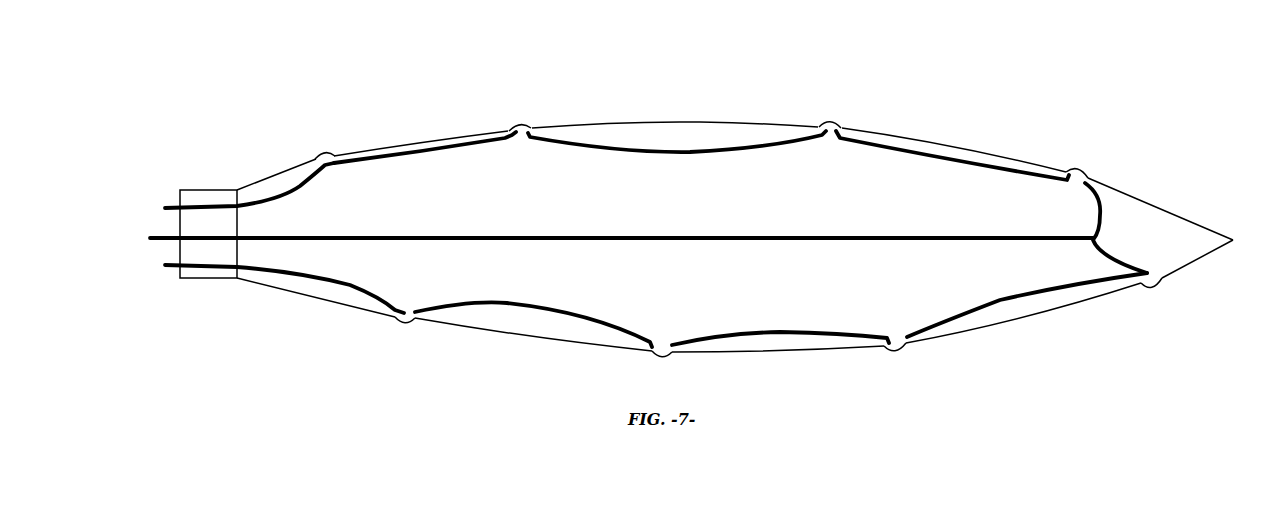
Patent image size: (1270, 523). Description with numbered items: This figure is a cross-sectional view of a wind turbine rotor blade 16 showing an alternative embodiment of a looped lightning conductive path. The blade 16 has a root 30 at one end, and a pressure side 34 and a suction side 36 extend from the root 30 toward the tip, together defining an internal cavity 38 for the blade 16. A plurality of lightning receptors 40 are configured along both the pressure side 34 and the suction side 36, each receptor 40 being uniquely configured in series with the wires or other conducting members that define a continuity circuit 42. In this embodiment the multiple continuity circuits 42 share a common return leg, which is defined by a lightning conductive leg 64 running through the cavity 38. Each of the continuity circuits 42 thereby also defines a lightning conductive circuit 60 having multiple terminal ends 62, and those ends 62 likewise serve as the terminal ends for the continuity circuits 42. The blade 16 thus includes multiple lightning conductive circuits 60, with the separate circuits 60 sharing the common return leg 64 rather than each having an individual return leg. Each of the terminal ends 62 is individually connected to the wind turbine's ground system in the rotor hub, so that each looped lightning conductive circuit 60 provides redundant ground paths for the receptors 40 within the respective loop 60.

The wind turbine rotor blade 16 is at (1117, 95).
The root 30 is at (205, 190).
The pressure side 34 is at (702, 122).
The suction side 36 is at (545, 340).
The internal cavity 38 is at (460, 172).
The lightning receptors 40 is at (832, 124).
The continuity circuits 42 is at (906, 160).
The lightning conductive circuit 60 is at (690, 155).
The terminal ends 62 is at (172, 208).
The lightning conductive leg 64 is at (823, 240).